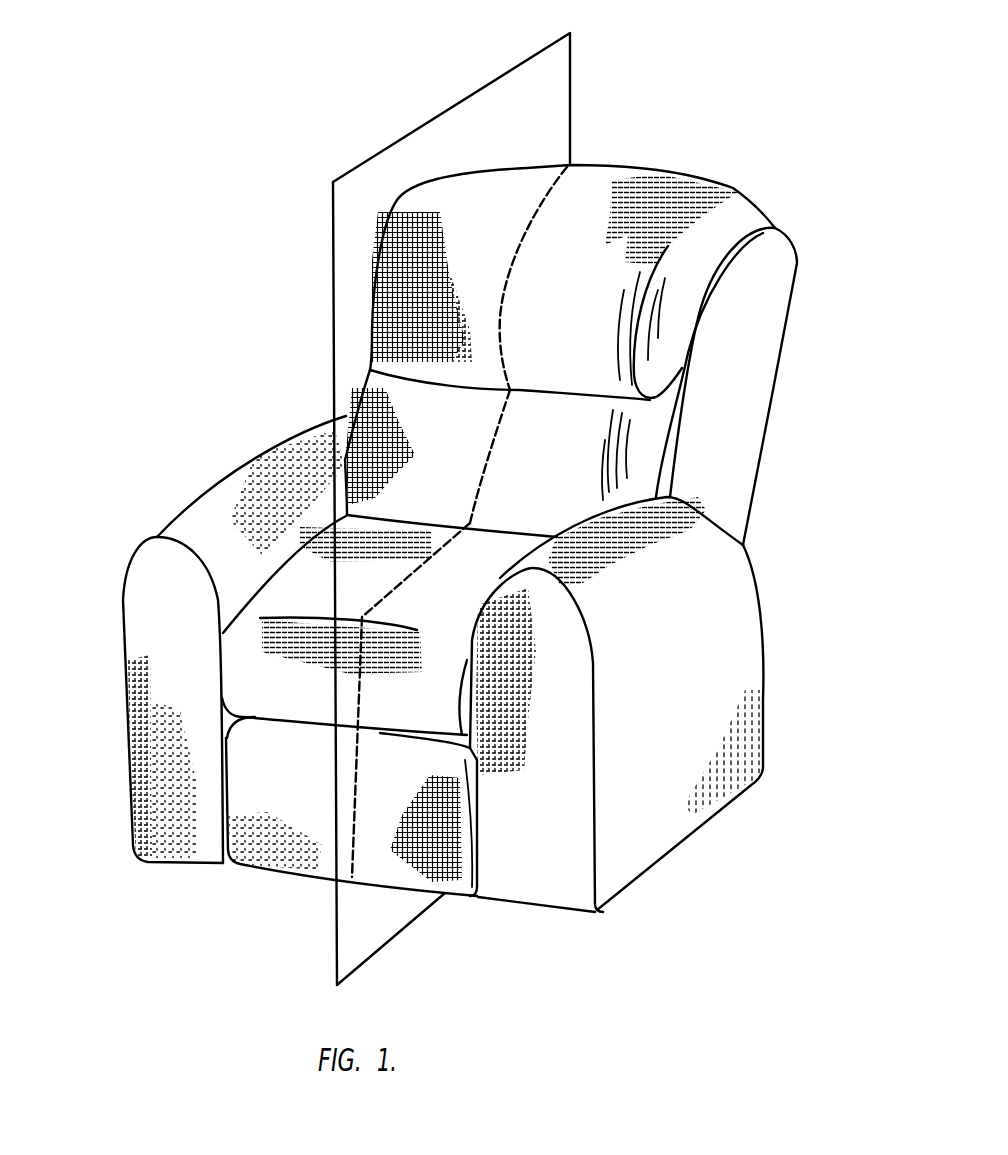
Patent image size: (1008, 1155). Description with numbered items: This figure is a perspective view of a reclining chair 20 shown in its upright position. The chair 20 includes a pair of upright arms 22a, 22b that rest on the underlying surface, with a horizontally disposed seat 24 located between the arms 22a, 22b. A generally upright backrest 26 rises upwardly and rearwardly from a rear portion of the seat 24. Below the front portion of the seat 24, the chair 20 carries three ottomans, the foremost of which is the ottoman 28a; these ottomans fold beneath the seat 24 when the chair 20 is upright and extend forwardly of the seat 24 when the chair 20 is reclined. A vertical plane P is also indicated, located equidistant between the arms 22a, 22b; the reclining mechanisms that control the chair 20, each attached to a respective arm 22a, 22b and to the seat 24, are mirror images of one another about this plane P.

The chair 20 is at (453, 542).
The upright arm 22a is at (713, 692).
The upright arm 22b is at (158, 647).
The seat 24 is at (407, 708).
The backrest 26 is at (608, 200).
The ottoman 28a is at (307, 828).
The vertical plane P is at (553, 80).